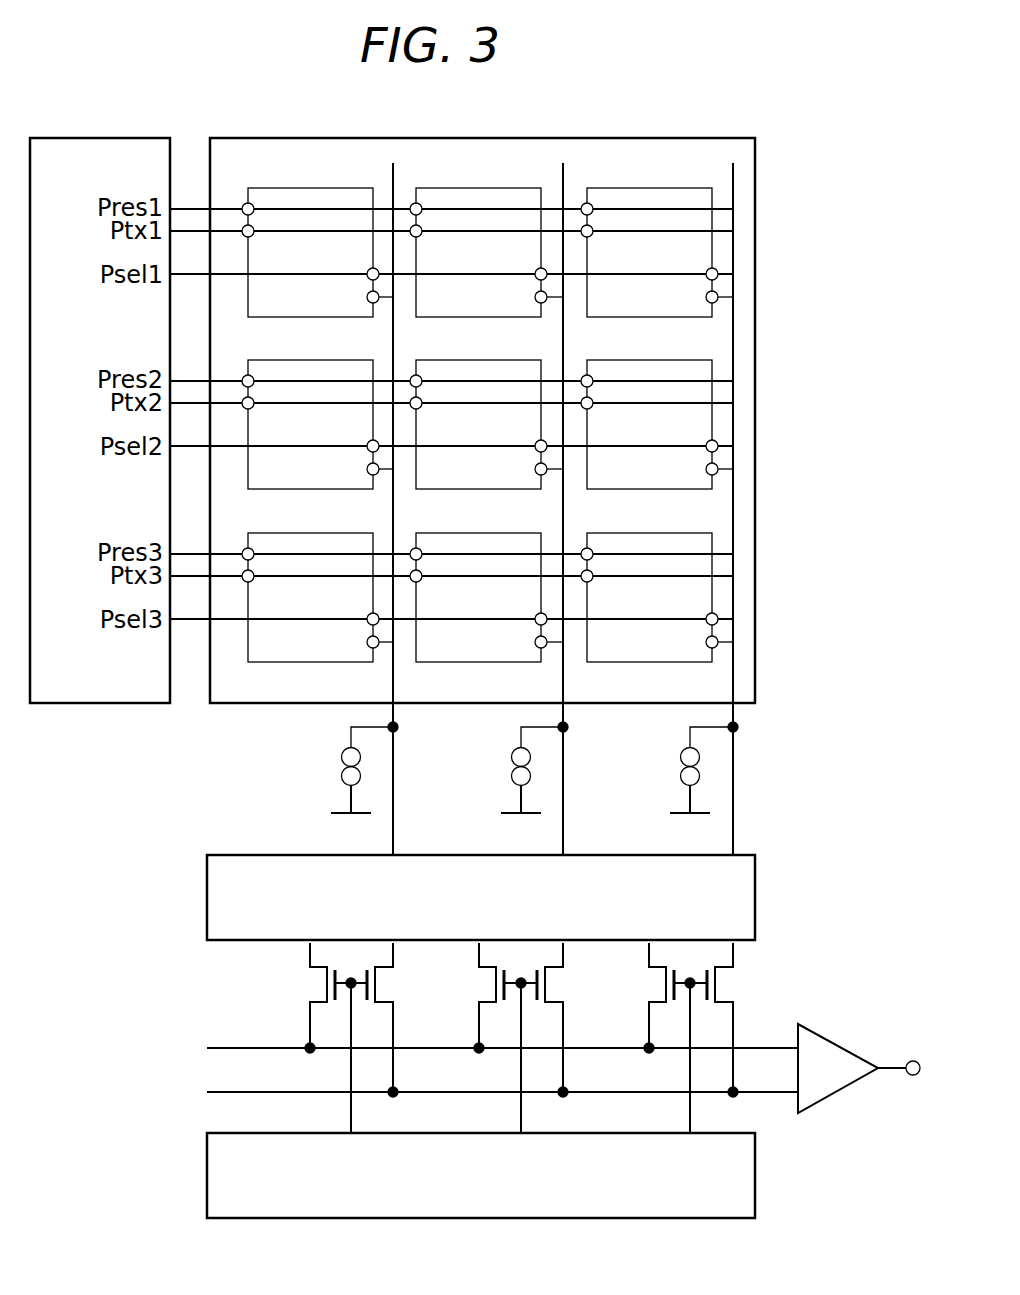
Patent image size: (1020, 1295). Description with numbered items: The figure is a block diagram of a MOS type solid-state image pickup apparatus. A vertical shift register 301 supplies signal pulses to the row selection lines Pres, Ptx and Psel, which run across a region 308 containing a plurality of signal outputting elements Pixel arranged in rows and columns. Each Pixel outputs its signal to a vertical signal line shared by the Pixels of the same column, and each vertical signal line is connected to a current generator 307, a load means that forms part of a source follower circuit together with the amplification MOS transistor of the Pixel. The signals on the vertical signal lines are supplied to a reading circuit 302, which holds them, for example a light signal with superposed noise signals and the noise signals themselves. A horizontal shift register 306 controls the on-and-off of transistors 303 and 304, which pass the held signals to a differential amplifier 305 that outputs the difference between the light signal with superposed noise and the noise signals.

The vertical shift register 301 is at (103, 138).
The reading circuit 302 is at (207, 898).
The transistor 303 is at (318, 983).
The transistor 304 is at (384, 983).
The differential amplifier 305 is at (845, 1046).
The horizontal shift register 306 is at (755, 1175).
The current generator 307 is at (340, 758).
The region 308 is at (755, 380).